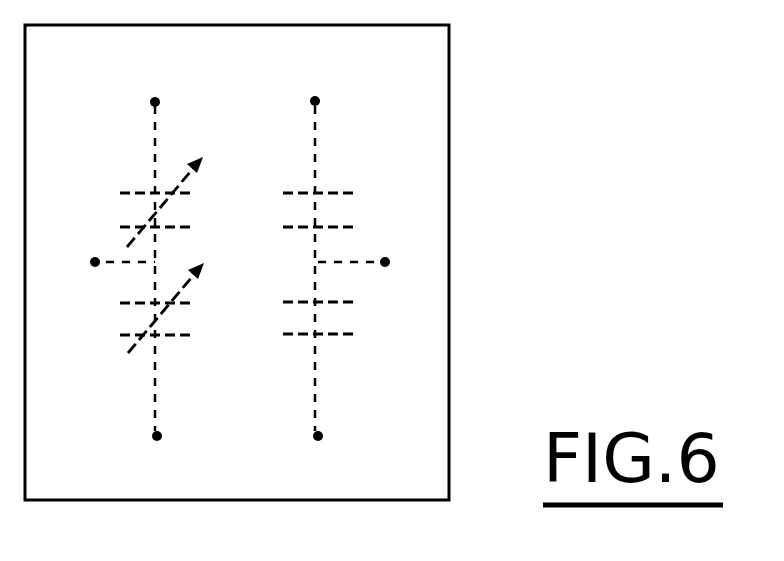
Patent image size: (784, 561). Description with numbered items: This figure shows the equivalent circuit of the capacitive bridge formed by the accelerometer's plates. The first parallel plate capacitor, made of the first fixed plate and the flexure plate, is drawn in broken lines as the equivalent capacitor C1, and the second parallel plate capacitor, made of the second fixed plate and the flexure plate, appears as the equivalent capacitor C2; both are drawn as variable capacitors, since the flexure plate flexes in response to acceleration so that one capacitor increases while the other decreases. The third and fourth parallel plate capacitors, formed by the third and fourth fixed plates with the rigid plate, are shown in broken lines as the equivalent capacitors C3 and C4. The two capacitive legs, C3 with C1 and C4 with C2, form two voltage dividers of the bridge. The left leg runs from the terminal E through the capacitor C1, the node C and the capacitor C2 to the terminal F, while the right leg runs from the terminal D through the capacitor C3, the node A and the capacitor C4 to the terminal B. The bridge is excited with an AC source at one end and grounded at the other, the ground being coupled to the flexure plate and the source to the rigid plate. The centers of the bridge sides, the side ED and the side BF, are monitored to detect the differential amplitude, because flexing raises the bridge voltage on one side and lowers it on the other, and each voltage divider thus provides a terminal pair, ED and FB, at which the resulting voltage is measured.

The bridge terminal E is at (156, 75).
The bridge terminal D is at (316, 75).
The bridge node C is at (102, 263).
The bridge node A is at (373, 263).
The bridge terminal F is at (158, 462).
The bridge terminal B is at (318, 462).
The first equivalent capacitor C1 is at (192, 202).
The second equivalent capacitor C2 is at (192, 308).
The third equivalent capacitor C3 is at (355, 212).
The fourth equivalent capacitor C4 is at (355, 322).